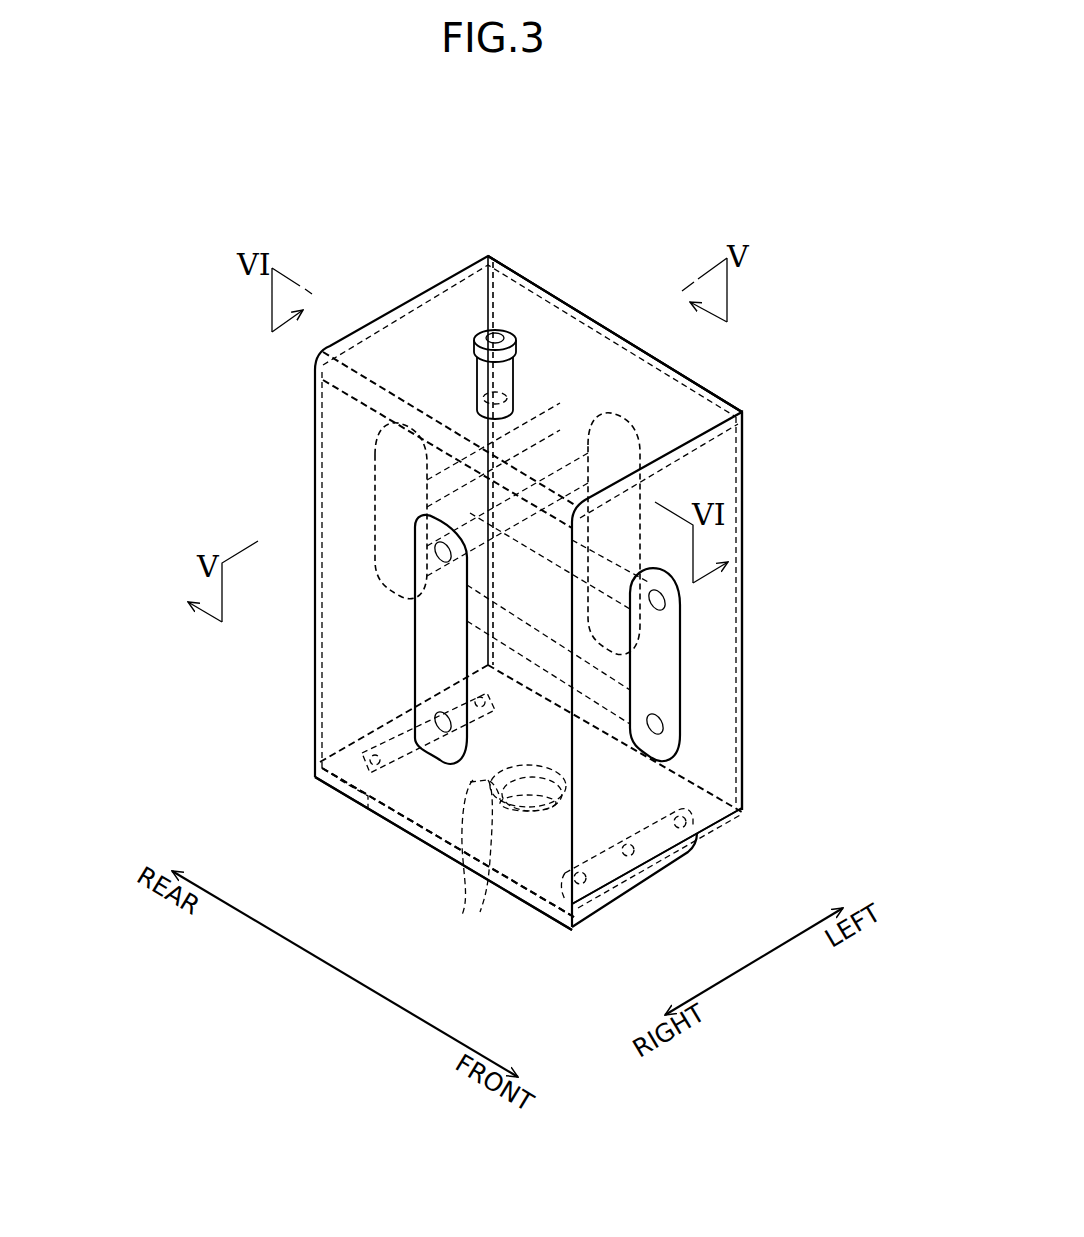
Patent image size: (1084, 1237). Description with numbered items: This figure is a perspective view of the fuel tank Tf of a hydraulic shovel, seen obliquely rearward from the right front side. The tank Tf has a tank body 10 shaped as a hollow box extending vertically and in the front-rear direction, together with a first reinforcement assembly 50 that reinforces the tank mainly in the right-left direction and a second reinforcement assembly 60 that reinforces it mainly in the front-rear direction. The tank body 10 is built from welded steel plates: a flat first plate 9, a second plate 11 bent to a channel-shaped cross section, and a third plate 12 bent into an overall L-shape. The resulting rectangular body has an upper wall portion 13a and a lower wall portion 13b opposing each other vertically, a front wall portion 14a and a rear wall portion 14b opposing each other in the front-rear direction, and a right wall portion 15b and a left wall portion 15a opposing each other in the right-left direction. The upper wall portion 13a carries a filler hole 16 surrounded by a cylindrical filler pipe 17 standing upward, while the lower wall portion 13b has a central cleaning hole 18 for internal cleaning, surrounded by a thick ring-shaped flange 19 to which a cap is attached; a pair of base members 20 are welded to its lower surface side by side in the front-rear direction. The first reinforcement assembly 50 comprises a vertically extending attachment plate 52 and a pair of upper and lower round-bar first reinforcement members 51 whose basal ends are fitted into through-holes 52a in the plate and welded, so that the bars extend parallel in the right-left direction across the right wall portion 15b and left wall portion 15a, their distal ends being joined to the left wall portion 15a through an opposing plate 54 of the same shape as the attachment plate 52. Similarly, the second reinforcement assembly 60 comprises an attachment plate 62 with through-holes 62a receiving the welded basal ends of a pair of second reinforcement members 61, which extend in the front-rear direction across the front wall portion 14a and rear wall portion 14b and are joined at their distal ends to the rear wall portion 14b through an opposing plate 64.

The tank body 10 is at (372, 295).
The upper wall portion 13a is at (511, 297).
The lower wall portion 13b is at (412, 795).
The front wall portion 14a is at (710, 457).
The rear wall portion 14b is at (458, 312).
The left wall portion 15a is at (640, 385).
The right wall portion 15b is at (530, 862).
The filler hole 16 is at (506, 390).
The filler pipe 17 is at (512, 365).
The cleaning hole 18 is at (462, 850).
The ring-shaped flange 19 is at (490, 866).
The base members 20 is at (620, 885).
The third plate 12 is at (543, 920).
The second plate 11 is at (728, 820).
The first plate 9 is at (748, 784).
The first reinforcement assembly 50 is at (242, 622).
The first reinforcement members 51 is at (465, 580).
The attachment plate 52 is at (420, 648).
The through-holes 52a is at (438, 552).
The opposing plate 54 is at (650, 420).
The second reinforcement assembly 60 is at (798, 628).
The second reinforcement members 61 is at (665, 612).
The attachment plate 62 is at (665, 660).
The through-holes 62a is at (663, 602).
The opposing plate 64 is at (375, 498).
The fuel tank Tf is at (778, 200).